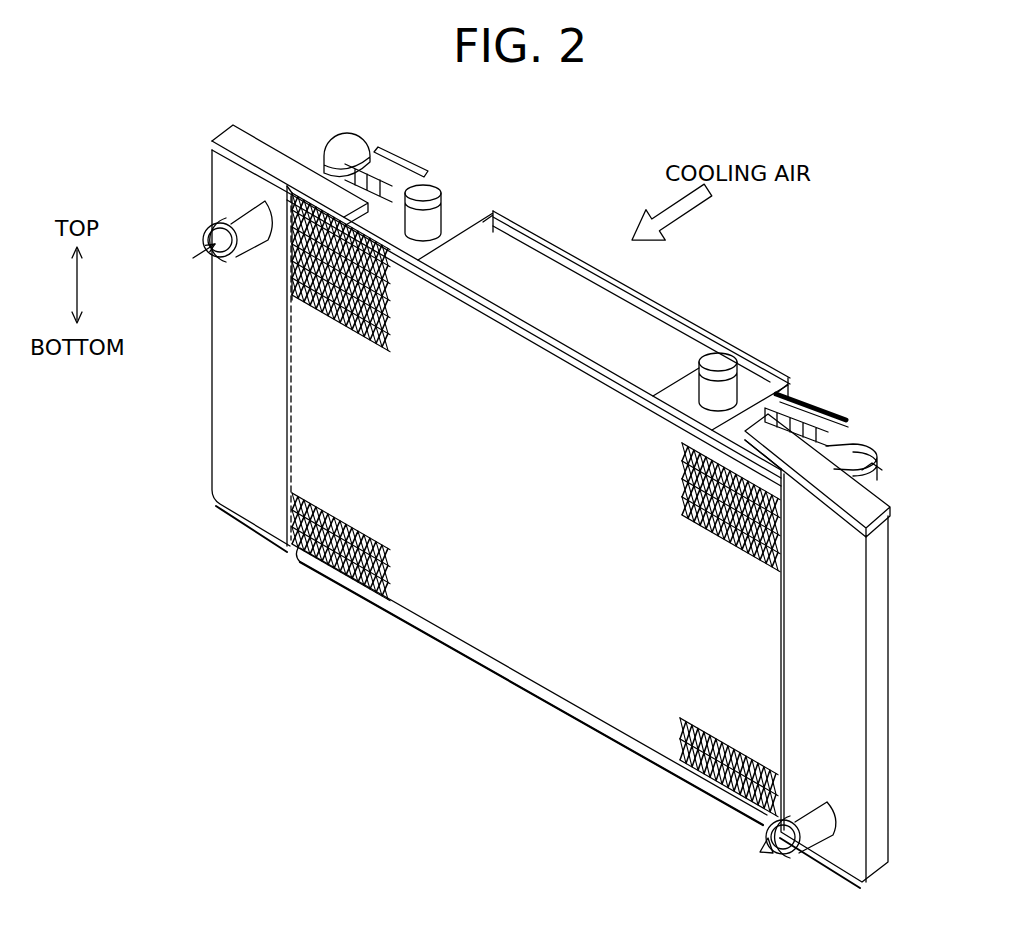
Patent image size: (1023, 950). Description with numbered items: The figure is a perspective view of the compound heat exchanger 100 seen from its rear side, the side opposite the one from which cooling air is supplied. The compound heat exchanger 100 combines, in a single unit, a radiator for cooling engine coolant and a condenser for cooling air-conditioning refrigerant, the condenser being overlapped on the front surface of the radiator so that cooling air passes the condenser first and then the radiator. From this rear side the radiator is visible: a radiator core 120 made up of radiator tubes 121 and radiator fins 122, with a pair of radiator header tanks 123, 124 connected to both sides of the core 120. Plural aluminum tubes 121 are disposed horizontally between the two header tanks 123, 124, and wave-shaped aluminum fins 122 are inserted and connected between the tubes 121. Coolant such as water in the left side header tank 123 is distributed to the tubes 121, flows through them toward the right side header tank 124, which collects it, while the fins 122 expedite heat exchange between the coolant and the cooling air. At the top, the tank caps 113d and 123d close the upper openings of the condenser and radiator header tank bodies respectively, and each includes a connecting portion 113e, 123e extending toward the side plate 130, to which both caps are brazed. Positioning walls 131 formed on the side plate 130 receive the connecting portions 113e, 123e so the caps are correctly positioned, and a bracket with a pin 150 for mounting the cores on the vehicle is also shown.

The compound heat exchanger 100 is at (654, 300).
The tank cap 113d is at (344, 150).
The connecting portion 113e is at (404, 162).
The radiator core 120 is at (637, 637).
The radiator tubes 121 is at (292, 300).
The radiator fins 122 is at (292, 234).
The radiator header tank 123 is at (230, 398).
The tank cap 123d is at (235, 153).
The connecting portion 123e is at (278, 184).
The radiator header tank 124 is at (824, 597).
The side plate 130 is at (530, 278).
The positioning walls 131 is at (322, 170).
The pin 150 is at (432, 196).